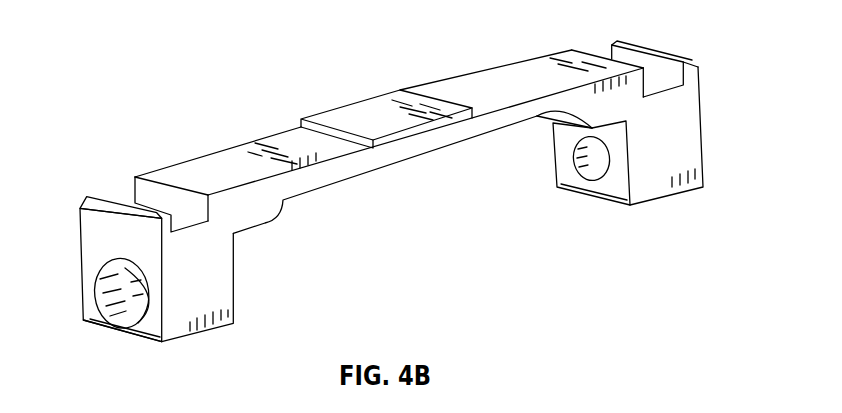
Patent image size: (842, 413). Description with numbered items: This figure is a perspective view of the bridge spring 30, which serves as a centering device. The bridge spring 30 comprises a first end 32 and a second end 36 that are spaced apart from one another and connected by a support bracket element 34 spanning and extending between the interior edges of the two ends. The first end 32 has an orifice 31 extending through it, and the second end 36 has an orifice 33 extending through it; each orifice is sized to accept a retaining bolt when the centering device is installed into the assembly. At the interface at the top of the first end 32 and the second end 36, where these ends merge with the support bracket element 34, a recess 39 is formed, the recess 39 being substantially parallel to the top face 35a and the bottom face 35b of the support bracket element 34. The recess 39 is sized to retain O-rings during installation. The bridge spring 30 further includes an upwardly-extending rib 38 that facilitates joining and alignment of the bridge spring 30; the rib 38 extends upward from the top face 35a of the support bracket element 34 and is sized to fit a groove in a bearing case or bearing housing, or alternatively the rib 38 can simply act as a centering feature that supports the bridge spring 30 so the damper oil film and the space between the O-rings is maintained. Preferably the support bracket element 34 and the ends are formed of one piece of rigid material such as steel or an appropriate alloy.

The bridge spring 30 is at (134, 78).
The orifice 31 is at (122, 300).
The first end 32 is at (147, 330).
The orifice 33 is at (580, 163).
The support bracket element 34 is at (346, 164).
The top face 35a is at (247, 157).
The bottom face 35b is at (667, 196).
The second end 36 is at (704, 148).
The upwardly-extending rib 38 is at (391, 115).
The recess 39 is at (178, 220).